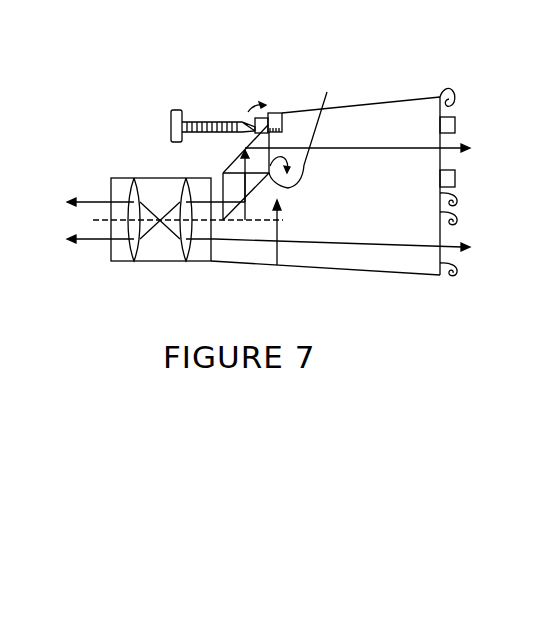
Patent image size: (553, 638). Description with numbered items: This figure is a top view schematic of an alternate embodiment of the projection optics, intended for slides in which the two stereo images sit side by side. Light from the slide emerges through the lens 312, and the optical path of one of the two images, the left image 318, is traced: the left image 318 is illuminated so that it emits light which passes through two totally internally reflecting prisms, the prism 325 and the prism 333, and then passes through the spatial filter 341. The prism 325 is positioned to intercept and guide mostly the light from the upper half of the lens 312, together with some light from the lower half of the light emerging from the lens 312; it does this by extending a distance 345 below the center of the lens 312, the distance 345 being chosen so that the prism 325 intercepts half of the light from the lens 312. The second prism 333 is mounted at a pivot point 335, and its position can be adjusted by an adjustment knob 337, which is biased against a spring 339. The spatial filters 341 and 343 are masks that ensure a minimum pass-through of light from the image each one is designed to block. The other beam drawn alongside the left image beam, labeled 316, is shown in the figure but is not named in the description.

The lens 312 is at (127, 261).
The first light beam 316 is at (251, 178).
The left image 318 is at (251, 243).
The totally internally reflecting prism 325 is at (220, 185).
The prism 333 is at (233, 155).
The pivot point 335 is at (309, 129).
The adjustment knob 337 is at (193, 120).
The spring 339 is at (275, 113).
The spatial filter 341 is at (443, 140).
The spatial filter 343 is at (443, 240).
The distance 345 is at (277, 265).